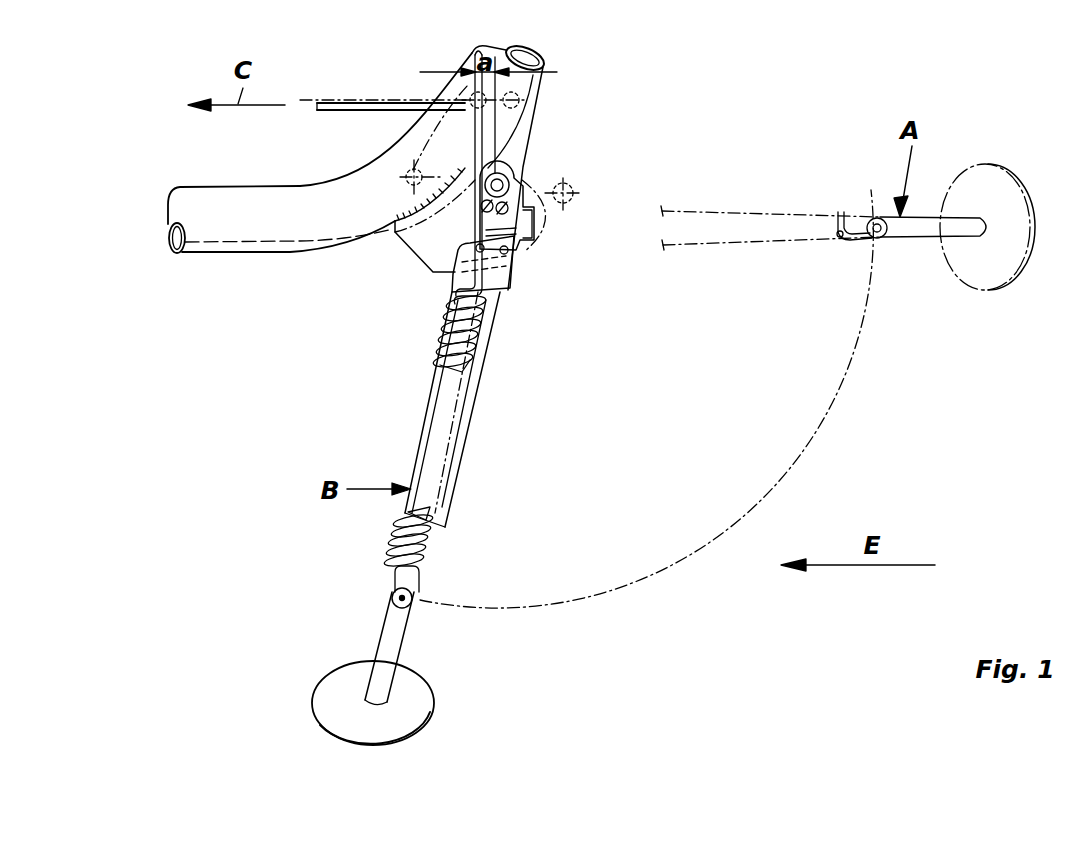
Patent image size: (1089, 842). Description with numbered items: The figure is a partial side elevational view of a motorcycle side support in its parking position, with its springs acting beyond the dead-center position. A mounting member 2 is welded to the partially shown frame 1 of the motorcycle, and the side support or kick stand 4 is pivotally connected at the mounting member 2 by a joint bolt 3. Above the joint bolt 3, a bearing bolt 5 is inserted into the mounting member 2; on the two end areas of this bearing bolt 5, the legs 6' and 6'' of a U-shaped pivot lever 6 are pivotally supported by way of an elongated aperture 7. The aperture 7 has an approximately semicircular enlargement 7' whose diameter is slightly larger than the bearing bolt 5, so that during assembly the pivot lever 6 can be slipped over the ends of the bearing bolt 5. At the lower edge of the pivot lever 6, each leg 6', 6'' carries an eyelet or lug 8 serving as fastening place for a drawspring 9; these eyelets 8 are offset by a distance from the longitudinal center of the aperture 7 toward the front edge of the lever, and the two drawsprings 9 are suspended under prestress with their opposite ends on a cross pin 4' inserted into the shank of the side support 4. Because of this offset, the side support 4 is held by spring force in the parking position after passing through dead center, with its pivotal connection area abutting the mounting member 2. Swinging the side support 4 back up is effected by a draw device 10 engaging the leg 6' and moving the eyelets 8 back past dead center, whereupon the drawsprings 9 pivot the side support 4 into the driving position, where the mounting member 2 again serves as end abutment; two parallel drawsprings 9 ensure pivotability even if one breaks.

The frame 1 is at (233, 230).
The mounting member 2 is at (420, 238).
The joint bolt 3 is at (523, 250).
The side support 4 is at (673, 445).
The cross pin 4' is at (605, 415).
The bearing bolt 5 is at (500, 183).
The pivot lever 6 is at (539, 205).
The leg of pivot lever 6' is at (521, 165).
The leg of pivot lever 6'' is at (556, 204).
The elongated aperture 7 is at (443, 204).
The semicircular enlargement 7' is at (561, 234).
The eyelet 8 is at (462, 248).
The drawspring 9 is at (470, 343).
The draw device 10 is at (343, 103).